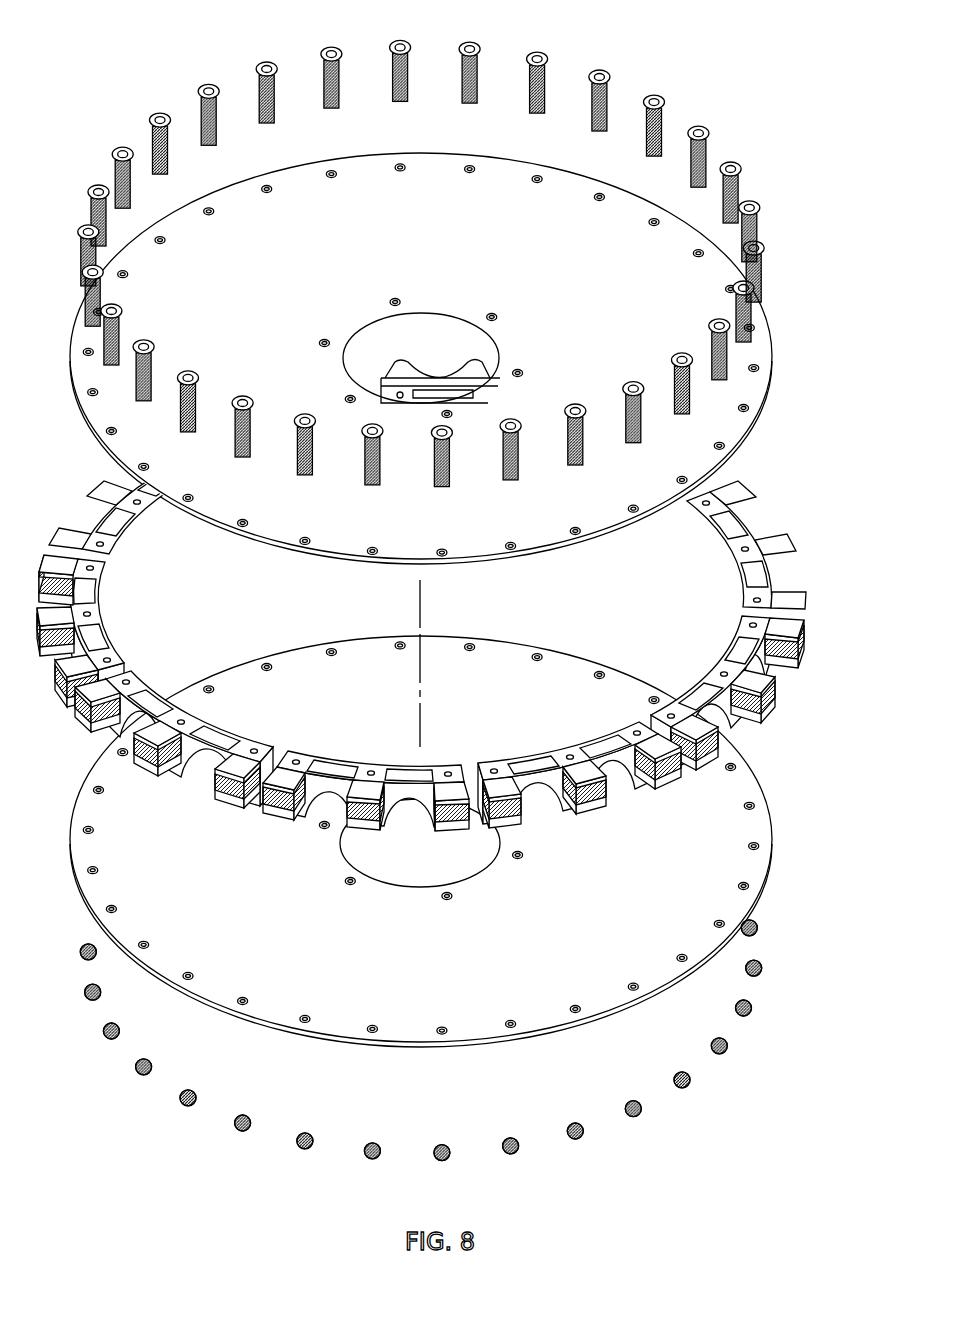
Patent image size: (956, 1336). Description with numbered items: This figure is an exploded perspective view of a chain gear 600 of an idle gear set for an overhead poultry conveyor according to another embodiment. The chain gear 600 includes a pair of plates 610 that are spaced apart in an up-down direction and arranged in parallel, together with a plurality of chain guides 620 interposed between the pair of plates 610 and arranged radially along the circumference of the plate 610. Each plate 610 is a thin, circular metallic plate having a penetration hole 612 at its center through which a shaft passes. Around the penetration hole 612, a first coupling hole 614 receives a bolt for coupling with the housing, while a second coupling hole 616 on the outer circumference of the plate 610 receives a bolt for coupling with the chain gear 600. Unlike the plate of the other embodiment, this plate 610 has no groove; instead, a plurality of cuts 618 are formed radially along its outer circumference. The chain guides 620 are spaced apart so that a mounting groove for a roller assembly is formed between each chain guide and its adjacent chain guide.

The chain gear 600 is at (737, 92).
The plate 610 is at (454, 580).
The penetration hole 612 is at (419, 888).
The first coupling hole 614 is at (447, 902).
The second coupling hole 616 is at (634, 992).
The cut 618 is at (574, 1014).
The chain guide 620 is at (768, 717).